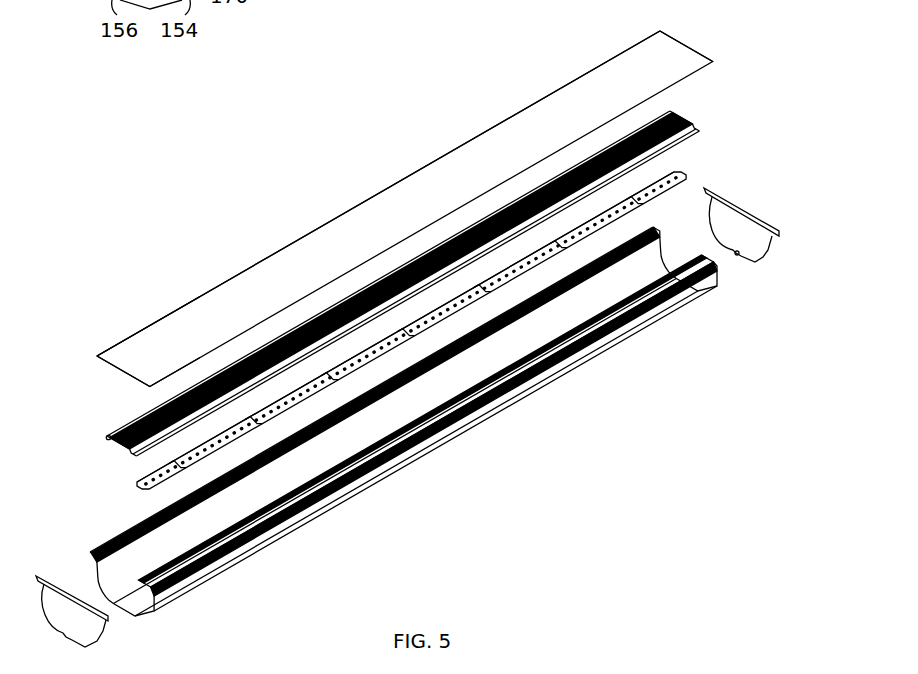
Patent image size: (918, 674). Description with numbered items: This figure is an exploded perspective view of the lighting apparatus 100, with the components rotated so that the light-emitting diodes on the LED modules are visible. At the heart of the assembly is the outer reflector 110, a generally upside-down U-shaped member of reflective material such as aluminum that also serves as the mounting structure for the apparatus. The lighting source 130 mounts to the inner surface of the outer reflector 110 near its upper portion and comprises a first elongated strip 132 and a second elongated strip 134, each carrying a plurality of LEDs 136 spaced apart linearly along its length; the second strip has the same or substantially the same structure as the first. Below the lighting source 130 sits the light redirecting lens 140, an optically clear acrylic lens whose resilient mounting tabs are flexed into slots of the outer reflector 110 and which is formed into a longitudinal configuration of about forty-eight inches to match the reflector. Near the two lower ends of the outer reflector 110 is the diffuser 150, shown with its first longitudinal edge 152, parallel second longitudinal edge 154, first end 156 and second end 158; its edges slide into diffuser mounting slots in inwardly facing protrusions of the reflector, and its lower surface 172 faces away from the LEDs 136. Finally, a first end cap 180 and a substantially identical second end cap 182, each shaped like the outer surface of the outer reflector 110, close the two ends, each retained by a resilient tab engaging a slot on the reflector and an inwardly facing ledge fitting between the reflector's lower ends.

The lighting apparatus 100 is at (242, 226).
The outer reflector 110 is at (487, 438).
The lighting source 130 is at (428, 330).
The first elongated strip 132 is at (145, 497).
The second elongated strip 134 is at (678, 181).
The light-emitting diodes (LEDs) 136 is at (138, 487).
The light redirecting lens 140 is at (708, 114).
The diffuser 150 is at (702, 14).
The first longitudinal edge 152 is at (160, 385).
The second longitudinal edge 154 is at (130, 337).
The first end 156 is at (121, 370).
The second end 158 is at (688, 47).
The lower surface 172 is at (167, 335).
The first end cap 180 is at (116, 636).
The second end cap 182 is at (750, 200).